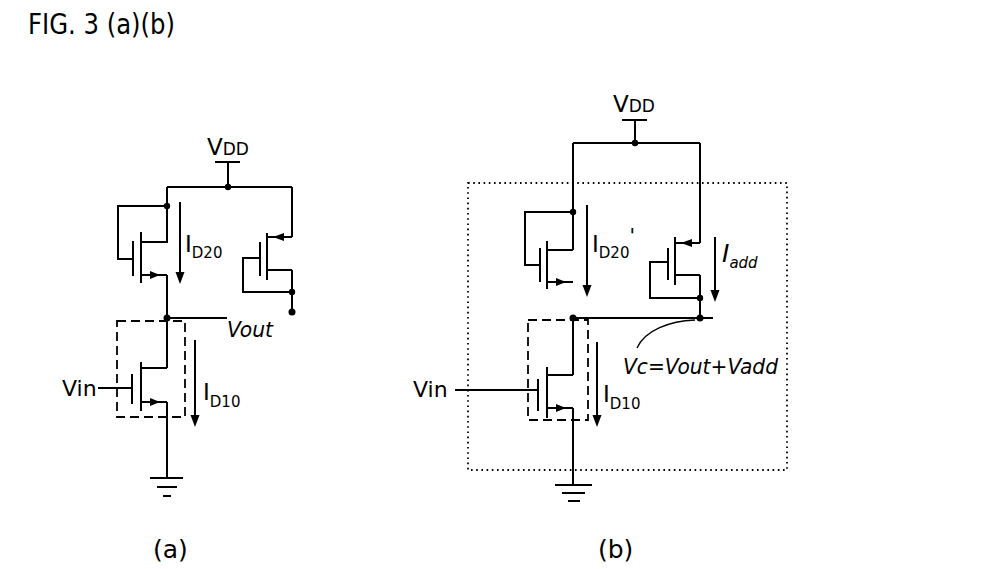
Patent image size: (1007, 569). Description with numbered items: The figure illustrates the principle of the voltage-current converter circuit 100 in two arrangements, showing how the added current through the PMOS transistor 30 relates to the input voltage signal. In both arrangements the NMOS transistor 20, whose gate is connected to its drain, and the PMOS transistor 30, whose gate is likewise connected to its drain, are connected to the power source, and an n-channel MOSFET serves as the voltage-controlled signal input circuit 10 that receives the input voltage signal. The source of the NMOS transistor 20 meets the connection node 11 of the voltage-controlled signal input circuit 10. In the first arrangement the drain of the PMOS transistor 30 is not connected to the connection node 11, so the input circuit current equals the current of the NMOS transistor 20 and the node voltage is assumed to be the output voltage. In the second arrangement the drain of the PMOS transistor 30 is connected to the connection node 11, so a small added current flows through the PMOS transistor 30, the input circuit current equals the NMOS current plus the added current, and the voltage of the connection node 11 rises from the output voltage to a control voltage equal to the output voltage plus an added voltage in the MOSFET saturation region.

The voltage-controlled signal input circuit 10 is at (150, 416).
The connection node 11 is at (167, 318).
The NMOS transistor 20 is at (150, 236).
The PMOS transistor 30 is at (280, 222).
The voltage-current converter circuit 100 is at (542, 182).